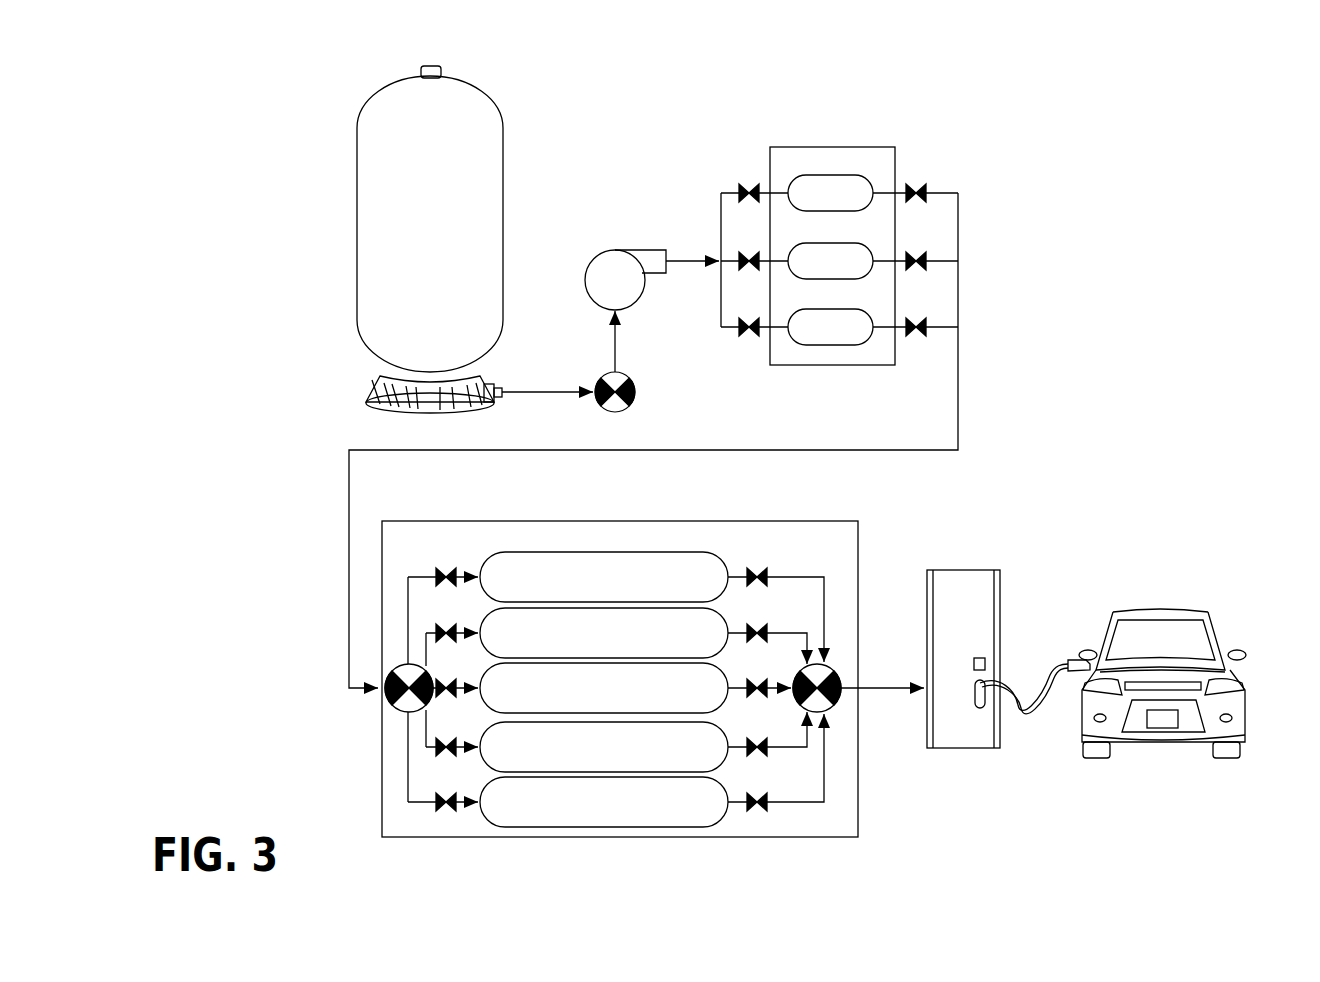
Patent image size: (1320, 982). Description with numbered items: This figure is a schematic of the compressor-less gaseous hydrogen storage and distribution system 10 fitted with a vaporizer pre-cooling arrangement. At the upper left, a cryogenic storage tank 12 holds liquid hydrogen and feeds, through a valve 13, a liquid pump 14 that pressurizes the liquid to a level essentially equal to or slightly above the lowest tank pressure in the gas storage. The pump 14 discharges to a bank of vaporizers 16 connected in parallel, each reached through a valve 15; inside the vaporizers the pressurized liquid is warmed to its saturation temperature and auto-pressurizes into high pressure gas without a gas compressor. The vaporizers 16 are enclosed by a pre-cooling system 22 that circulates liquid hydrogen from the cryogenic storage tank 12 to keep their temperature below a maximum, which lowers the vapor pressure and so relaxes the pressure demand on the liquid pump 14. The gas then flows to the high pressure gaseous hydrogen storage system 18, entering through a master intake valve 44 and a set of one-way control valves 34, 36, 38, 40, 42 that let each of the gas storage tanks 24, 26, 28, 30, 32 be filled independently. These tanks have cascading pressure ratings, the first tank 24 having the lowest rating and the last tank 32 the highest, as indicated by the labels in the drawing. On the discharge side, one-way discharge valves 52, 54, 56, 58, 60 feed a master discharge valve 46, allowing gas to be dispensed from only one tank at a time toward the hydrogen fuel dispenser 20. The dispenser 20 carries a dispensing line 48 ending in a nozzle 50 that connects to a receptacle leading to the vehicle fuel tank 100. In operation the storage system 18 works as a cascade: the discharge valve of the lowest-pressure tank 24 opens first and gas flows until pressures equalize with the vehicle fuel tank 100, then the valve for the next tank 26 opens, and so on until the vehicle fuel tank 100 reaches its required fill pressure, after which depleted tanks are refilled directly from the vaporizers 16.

The gaseous hydrogen storage and distribution system 10 is at (1084, 128).
The cryogenic storage tank 12 is at (505, 138).
The valve 13 is at (637, 391).
The liquid pump 14 is at (613, 250).
The valve 15 is at (746, 190).
The vaporizer 16 is at (873, 183).
The gaseous hydrogen storage system 18 is at (482, 518).
The hydrogen fuel dispenser 20 is at (962, 570).
The pre-cooling system 22 is at (818, 147).
The gas storage tank 24 is at (728, 565).
The gas storage tank 26 is at (728, 622).
The gas storage tank 28 is at (728, 678).
The gas storage tank 30 is at (728, 765).
The gas storage tank 32 is at (728, 820).
The control valve 34 is at (440, 575).
The control valve 36 is at (440, 630).
The control valve 38 is at (448, 696).
The control valve 40 is at (448, 755).
The control valve 42 is at (448, 808).
The master intake valve 44 is at (394, 672).
The master discharge valve 46 is at (838, 697).
The dispensing line 48 is at (1019, 716).
The nozzle 50 is at (1072, 660).
The one-way discharge valve 52 is at (760, 576).
The one-way discharge valve 54 is at (760, 630).
The one-way discharge valve 56 is at (760, 688).
The one-way discharge valve 58 is at (760, 750).
The one-way discharge valve 60 is at (760, 803).
The vehicle fuel tank 100 is at (1178, 752).